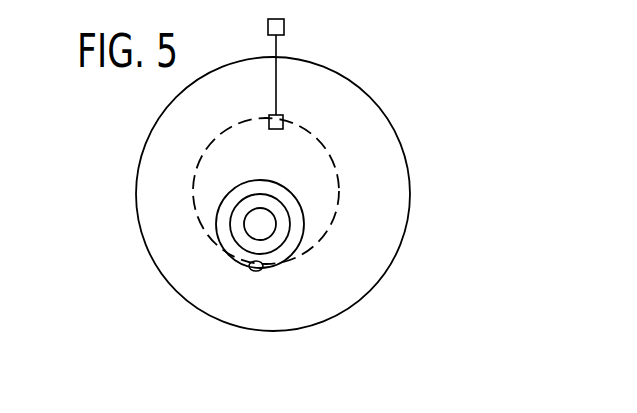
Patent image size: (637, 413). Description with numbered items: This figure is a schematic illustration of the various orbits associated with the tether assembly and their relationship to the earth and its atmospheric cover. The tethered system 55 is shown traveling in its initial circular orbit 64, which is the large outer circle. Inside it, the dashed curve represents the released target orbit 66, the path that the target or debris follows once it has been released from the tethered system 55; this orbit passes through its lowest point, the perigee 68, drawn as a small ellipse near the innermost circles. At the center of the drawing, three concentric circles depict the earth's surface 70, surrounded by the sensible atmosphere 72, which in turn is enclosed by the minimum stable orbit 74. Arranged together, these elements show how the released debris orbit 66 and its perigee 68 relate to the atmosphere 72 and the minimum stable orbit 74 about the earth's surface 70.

The tethered system 55 is at (279, 43).
The initial circular orbit 64 is at (328, 68).
The released target orbit 66 is at (307, 133).
The perigee 68 is at (265, 272).
The earth's surface 70 is at (244, 228).
The sensible atmosphere 72 is at (230, 215).
The minimum stable orbit 74 is at (253, 180).